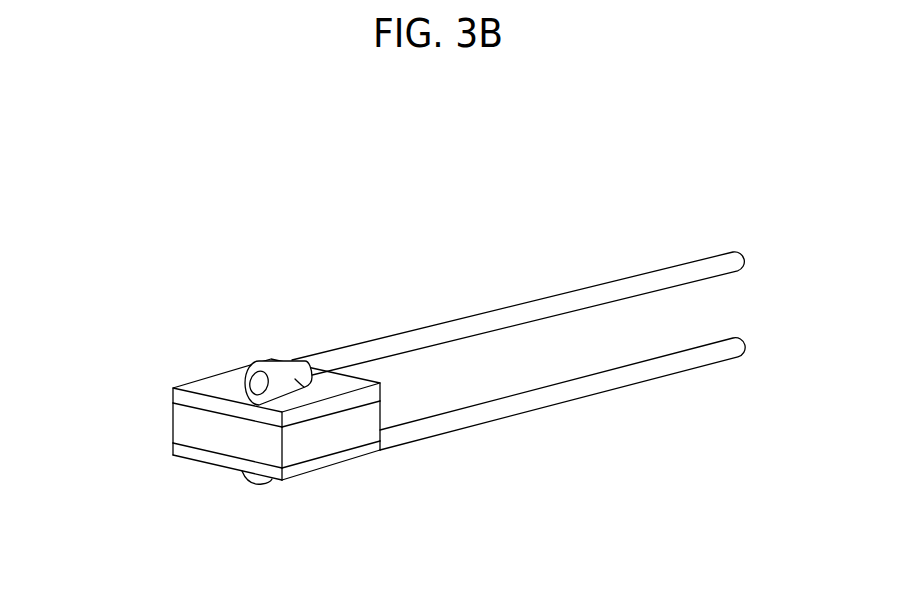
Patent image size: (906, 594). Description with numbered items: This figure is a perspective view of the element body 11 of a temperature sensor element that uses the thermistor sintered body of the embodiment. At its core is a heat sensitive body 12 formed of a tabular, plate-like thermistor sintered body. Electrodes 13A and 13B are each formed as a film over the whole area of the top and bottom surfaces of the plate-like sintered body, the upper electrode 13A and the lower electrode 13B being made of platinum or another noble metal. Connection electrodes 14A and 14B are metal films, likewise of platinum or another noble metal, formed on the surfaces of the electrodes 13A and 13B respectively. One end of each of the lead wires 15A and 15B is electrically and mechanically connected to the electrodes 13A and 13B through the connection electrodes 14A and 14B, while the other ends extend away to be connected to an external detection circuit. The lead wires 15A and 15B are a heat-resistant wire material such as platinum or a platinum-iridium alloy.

The element body 11 is at (495, 167).
The heat sensitive body 12 is at (173, 432).
The electrode 13A is at (173, 393).
The electrode 13B is at (173, 448).
The connection electrode 14A is at (248, 385).
The connection electrode 14B is at (270, 482).
The lead wire 15A is at (633, 273).
The lead wire 15B is at (675, 377).